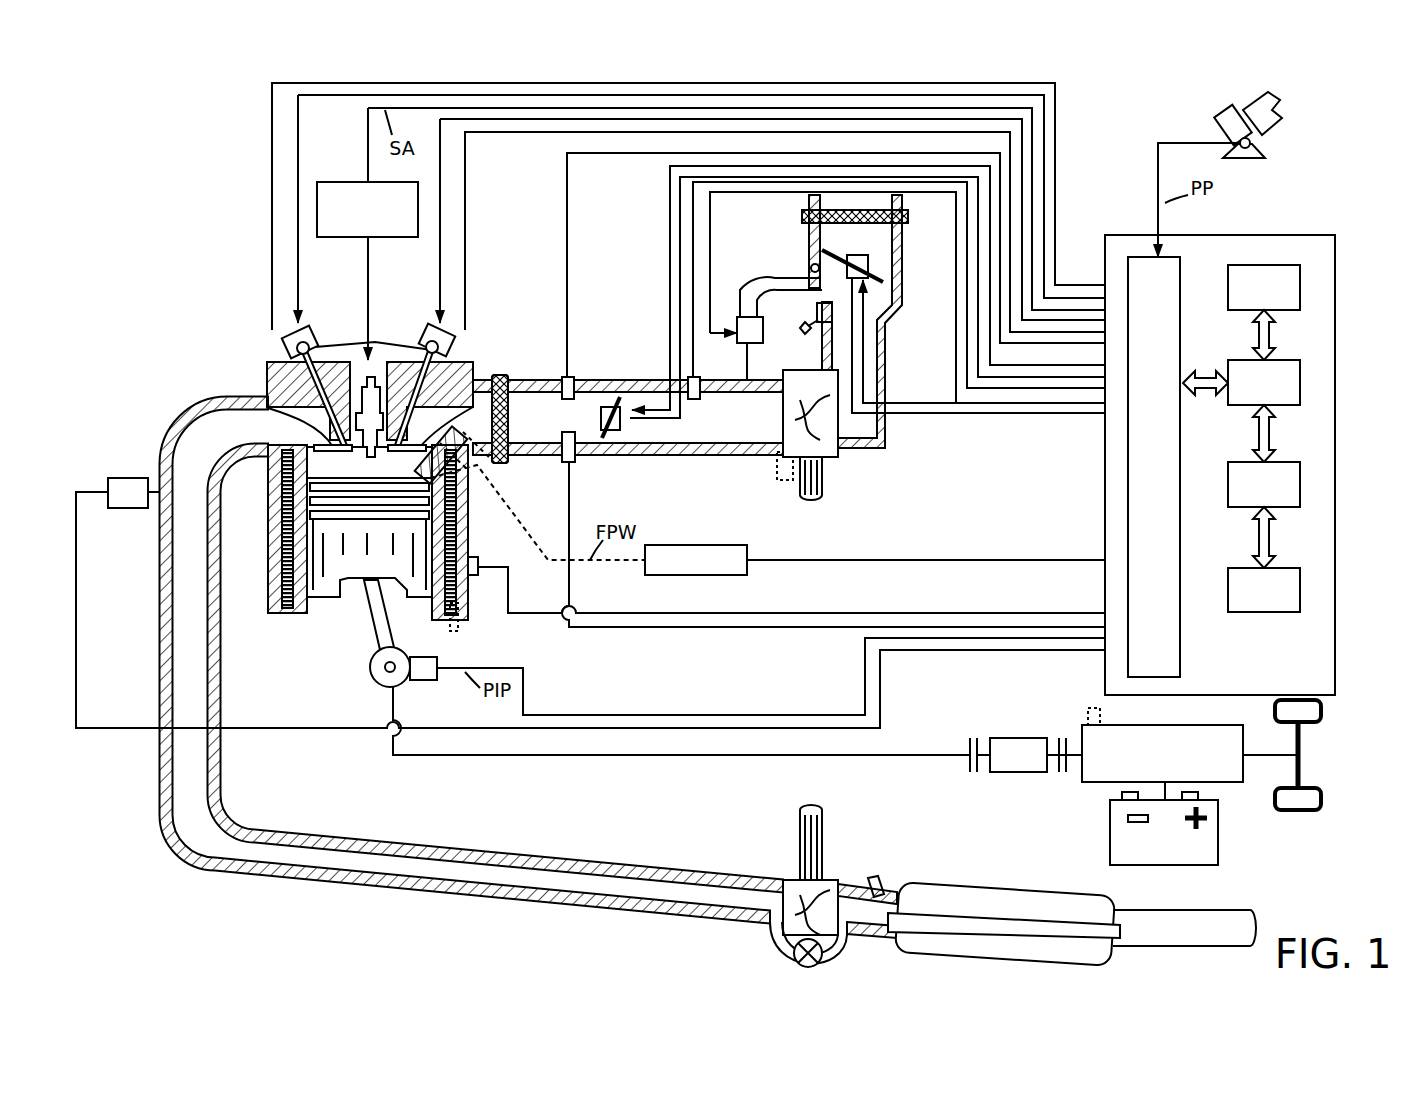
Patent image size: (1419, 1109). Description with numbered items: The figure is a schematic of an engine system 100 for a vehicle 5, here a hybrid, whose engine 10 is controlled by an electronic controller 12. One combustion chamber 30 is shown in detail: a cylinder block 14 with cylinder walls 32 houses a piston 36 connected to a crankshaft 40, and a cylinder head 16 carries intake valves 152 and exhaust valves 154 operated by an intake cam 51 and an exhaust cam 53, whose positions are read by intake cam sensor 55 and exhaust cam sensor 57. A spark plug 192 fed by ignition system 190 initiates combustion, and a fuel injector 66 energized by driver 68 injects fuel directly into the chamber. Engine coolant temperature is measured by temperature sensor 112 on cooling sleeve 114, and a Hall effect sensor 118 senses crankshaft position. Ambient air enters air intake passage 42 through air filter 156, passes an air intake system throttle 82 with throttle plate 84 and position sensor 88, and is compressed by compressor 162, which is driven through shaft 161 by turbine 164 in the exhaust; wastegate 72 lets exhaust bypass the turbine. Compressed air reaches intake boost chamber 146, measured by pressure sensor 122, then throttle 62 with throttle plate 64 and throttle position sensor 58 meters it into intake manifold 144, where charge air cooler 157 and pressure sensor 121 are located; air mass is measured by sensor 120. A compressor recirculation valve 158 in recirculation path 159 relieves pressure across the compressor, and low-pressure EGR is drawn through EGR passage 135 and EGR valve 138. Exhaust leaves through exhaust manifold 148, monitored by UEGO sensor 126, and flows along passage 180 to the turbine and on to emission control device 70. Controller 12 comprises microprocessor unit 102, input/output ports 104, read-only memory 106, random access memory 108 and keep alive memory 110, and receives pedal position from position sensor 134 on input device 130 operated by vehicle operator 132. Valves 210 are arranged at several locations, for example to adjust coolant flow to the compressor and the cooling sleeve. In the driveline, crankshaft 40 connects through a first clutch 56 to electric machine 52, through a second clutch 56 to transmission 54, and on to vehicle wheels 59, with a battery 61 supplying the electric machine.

The engine system 100 is at (120, 145).
The engine 10 is at (198, 298).
The exhaust passage 180 is at (412, 905).
The exhaust manifold 148 is at (496, 654).
The exhaust valves 154 is at (270, 400).
The intake valves 152 is at (430, 440).
The combustion chamber 30 is at (272, 560).
The cylinder block 14 is at (262, 514).
The cylinder walls 32 is at (308, 625).
The piston 36 is at (352, 565).
The crankshaft 40 is at (378, 688).
The Hall effect sensor 118 is at (420, 685).
The spark plug 192 is at (372, 338).
The exhaust cam 53 is at (305, 322).
The intake cam sensor 55 is at (445, 335).
The exhaust cam sensor 57 is at (298, 348).
The intake cam 51 is at (420, 308).
The fuel injector 66 is at (452, 470).
The temperature sensor 112 is at (480, 560).
The cooling sleeve 114 is at (462, 600).
The valve 210 is at (455, 620).
The cylinder head 16 is at (478, 368).
The intake manifold 144 is at (545, 420).
The intake boost chamber 146 is at (715, 420).
The charge air cooler 157 is at (510, 460).
The pressure sensor 121 is at (572, 377).
The air mass sensor 120 is at (572, 463).
The pressure sensor 122 is at (700, 378).
The throttle plate 64 is at (628, 405).
The throttle 62 is at (610, 395).
The throttle position sensor 58 is at (628, 440).
The compressor recirculation valve 158 is at (747, 317).
The compressor recirculation path 159 is at (757, 375).
The EGR valve 138 is at (817, 308).
The EGR passage 135 is at (803, 330).
The air intake passage 42 is at (968, 321).
The air filter 156 is at (908, 217).
The throttle plate 84 is at (815, 258).
The position sensor 88 is at (814, 272).
The air intake system throttle 82 is at (810, 266).
The compressor 162 is at (840, 455).
The shaft 161 is at (825, 485).
The turbine 164 is at (788, 880).
The emission control device 70 is at (897, 950).
The wastegate 72 is at (795, 960).
The ignition system 190 is at (360, 182).
The driver 68 is at (718, 545).
The UEGO sensor 126 is at (108, 483).
The controller 12 is at (1335, 236).
The input/output ports 104 is at (1185, 256).
The read-only memory 106 is at (1303, 282).
The microprocessor unit 102 is at (1303, 384).
The random access memory 108 is at (1303, 487).
The keep alive memory 110 is at (1303, 590).
The input device 130 is at (1225, 118).
The vehicle operator 132 is at (1278, 107).
The position sensor 134 is at (1258, 143).
The clutch 56 is at (972, 745).
The electric machine 52 is at (1018, 773).
The transmission 54 is at (1228, 782).
The vehicle wheels 59 is at (1305, 808).
The vehicle 5 is at (1345, 735).
The battery 61 is at (1163, 866).